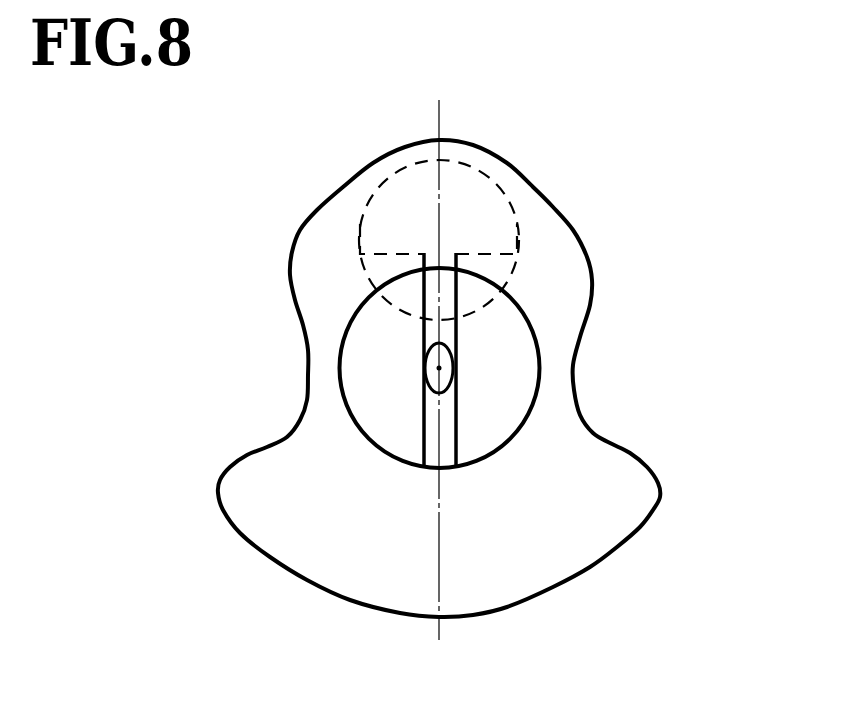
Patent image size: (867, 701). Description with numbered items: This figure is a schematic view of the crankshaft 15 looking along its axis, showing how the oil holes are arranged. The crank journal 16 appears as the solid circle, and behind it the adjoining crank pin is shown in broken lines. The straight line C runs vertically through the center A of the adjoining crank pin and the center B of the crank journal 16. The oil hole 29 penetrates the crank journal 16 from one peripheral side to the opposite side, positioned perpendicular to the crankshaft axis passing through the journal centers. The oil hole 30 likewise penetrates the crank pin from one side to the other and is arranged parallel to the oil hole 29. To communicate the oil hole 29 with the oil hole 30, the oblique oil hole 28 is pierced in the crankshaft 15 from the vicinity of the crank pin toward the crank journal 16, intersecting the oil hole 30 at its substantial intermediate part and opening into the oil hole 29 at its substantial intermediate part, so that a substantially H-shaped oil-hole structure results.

The crankshaft 15 is at (631, 315).
The crank journal 16 is at (540, 398).
The oil hole 28 is at (445, 295).
The oil hole 29 is at (456, 405).
The oil hole 30 is at (360, 224).
The center of the adjoining crank pin A is at (440, 245).
The center of the crank journal B is at (453, 370).
The straight line C is at (440, 122).